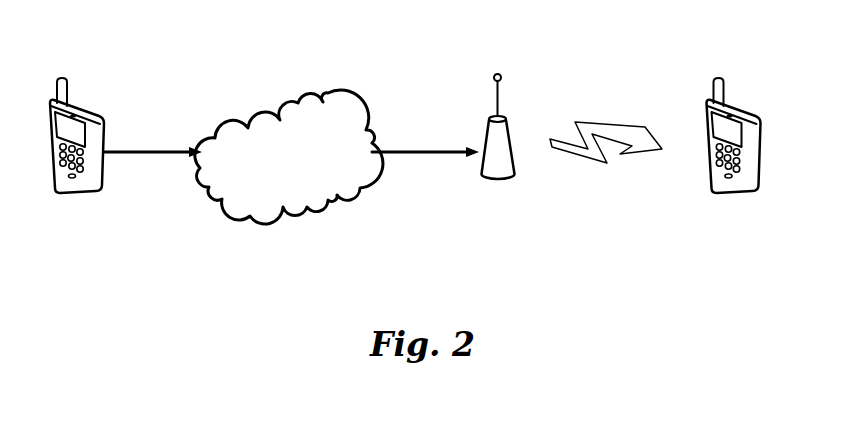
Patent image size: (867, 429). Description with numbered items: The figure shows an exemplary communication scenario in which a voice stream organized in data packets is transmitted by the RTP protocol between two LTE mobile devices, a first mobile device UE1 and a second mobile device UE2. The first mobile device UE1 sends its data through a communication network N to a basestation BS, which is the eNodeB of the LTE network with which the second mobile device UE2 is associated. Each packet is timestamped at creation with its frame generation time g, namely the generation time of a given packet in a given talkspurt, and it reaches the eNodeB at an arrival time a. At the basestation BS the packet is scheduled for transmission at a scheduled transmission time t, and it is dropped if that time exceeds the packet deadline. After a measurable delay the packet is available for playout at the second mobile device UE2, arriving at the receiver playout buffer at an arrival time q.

The first mobile device UE1 is at (80, 109).
The second mobile device UE2 is at (741, 105).
The communication network N is at (328, 94).
The basestation BS is at (507, 133).
The generation time g is at (147, 162).
The arrival time at the eNodeB a is at (420, 162).
The scheduled transmission time t is at (531, 162).
The arrival time at the receiver playout buffer q is at (721, 155).